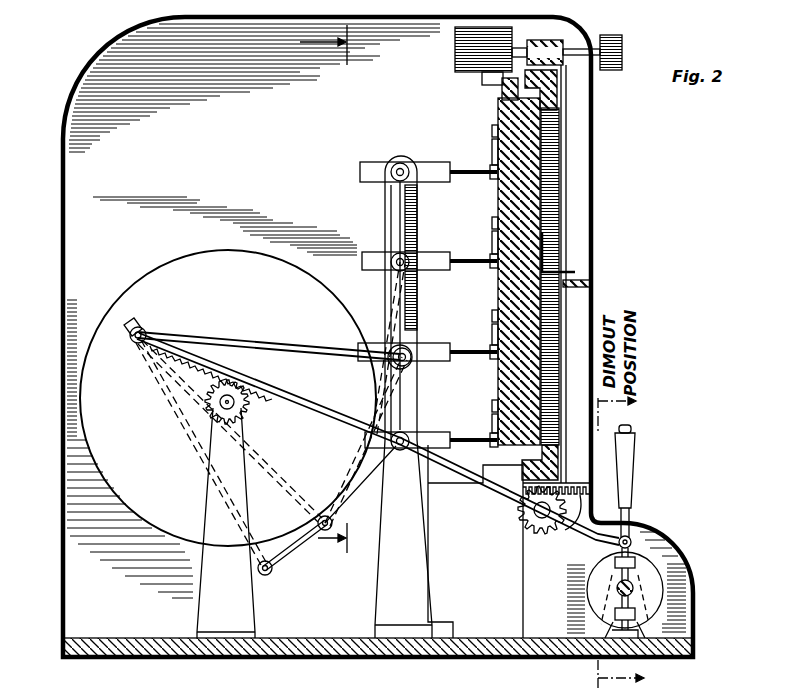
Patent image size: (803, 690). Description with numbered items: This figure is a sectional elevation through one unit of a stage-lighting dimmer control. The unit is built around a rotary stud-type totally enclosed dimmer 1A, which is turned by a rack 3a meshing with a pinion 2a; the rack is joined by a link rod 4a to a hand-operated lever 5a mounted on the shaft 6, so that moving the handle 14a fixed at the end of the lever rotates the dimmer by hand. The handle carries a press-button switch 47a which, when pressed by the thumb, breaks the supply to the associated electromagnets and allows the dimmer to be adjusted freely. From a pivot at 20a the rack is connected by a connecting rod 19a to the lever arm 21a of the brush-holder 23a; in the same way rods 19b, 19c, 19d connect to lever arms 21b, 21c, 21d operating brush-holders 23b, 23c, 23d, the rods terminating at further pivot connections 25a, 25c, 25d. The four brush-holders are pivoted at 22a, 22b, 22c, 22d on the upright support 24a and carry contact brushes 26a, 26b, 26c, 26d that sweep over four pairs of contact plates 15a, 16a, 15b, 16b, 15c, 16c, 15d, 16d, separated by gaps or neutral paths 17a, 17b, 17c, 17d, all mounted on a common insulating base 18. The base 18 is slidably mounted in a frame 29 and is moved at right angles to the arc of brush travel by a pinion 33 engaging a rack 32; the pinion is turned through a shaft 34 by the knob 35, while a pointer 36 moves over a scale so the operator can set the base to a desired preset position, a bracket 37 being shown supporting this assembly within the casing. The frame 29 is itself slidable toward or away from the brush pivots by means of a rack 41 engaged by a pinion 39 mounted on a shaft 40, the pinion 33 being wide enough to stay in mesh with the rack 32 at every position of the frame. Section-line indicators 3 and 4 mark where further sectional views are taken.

The rotary stud-type totally enclosed dimmer 1A is at (148, 268).
The pinion 2a is at (210, 406).
The rack 3a is at (240, 385).
The link rod 4a is at (443, 466).
The hand-operated lever 5a is at (630, 522).
The shaft 6 is at (640, 592).
The handle 14a is at (634, 468).
The contact plate 15a is at (497, 106).
The contact plate 15b is at (497, 200).
The contact plate 15c is at (497, 292).
The contact plate 15d is at (497, 382).
The contact plate 16a is at (492, 150).
The contact plate 16b is at (492, 240).
The contact plate 16c is at (492, 334).
The contact plate 16d is at (492, 424).
The gap 17a is at (492, 131).
The gap 17b is at (492, 223).
The gap 17c is at (492, 316).
The gap 17d is at (492, 406).
The base 18 is at (549, 160).
The connecting rod 19a is at (288, 344).
The connecting rod 19b is at (326, 410).
The connecting rod 19c is at (254, 448).
The connecting rod 19d is at (200, 460).
The pivot 20a is at (135, 344).
The lever arm 21a is at (388, 200).
The lever arm 21b is at (380, 400).
The lever arm 21c is at (358, 442).
The lever arm 21d is at (296, 552).
The pivot 22a is at (393, 164).
The pivot 22b is at (394, 268).
The pivot 22c is at (410, 350).
The pivot 22d is at (410, 432).
The brush-holder 23a is at (430, 162).
The brush-holder 23b is at (440, 244).
The brush-holder 23c is at (438, 344).
The brush-holder 23d is at (444, 428).
The upright support 24a is at (403, 539).
The pivot 25a is at (390, 364).
The pivot 25c is at (325, 515).
The pivot 25d is at (268, 580).
The contact brush 26a is at (490, 177).
The contact brush 26b is at (490, 266).
The contact brush 26c is at (491, 357).
The contact brush 26d is at (490, 447).
The frame 29 is at (557, 100).
The rack 32 is at (502, 90).
The pinion 33 is at (455, 56).
The shaft 34 is at (576, 45).
The knob 35 is at (622, 45).
The pointer 36 is at (552, 270).
The bracket 37 is at (593, 282).
The pinion 39 is at (533, 521).
The shaft 40 is at (530, 511).
The rack 41 is at (578, 497).
The press-button switch 47a is at (632, 430).
The section line 3- 3 is at (629, 539).
The section line 4- 4 is at (331, 289).